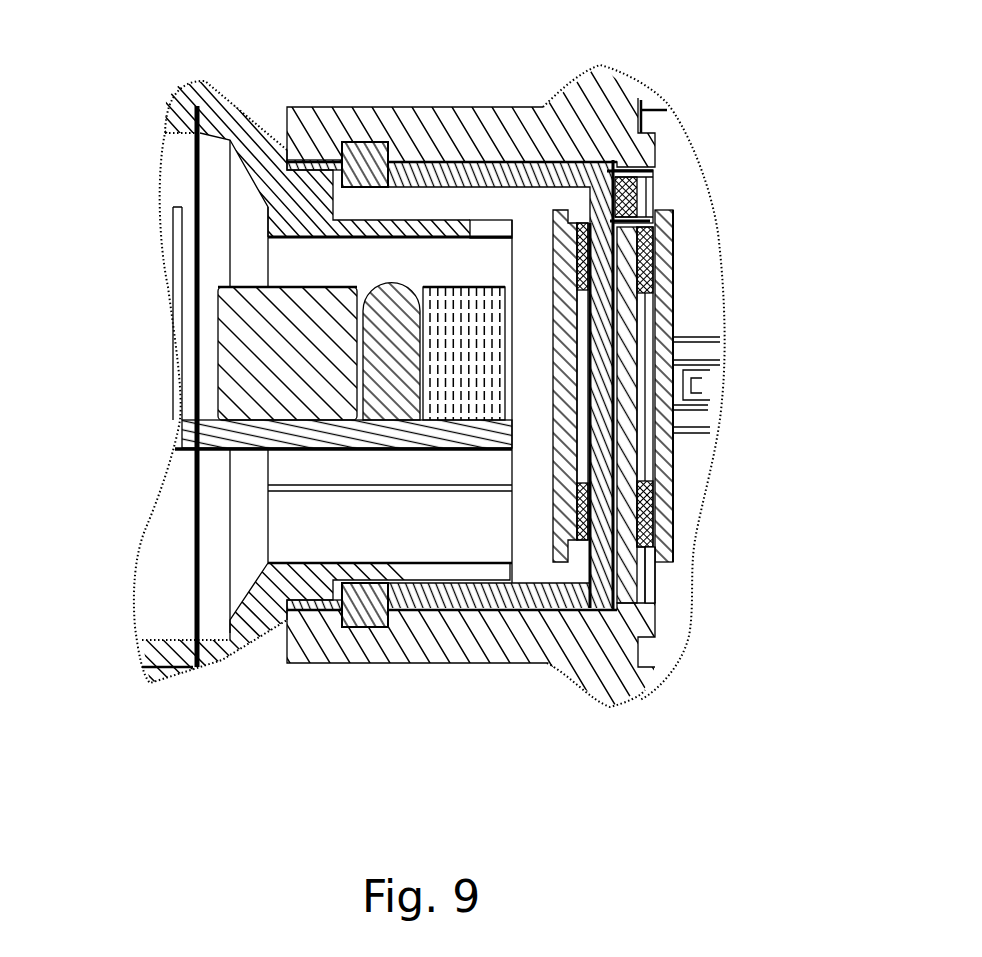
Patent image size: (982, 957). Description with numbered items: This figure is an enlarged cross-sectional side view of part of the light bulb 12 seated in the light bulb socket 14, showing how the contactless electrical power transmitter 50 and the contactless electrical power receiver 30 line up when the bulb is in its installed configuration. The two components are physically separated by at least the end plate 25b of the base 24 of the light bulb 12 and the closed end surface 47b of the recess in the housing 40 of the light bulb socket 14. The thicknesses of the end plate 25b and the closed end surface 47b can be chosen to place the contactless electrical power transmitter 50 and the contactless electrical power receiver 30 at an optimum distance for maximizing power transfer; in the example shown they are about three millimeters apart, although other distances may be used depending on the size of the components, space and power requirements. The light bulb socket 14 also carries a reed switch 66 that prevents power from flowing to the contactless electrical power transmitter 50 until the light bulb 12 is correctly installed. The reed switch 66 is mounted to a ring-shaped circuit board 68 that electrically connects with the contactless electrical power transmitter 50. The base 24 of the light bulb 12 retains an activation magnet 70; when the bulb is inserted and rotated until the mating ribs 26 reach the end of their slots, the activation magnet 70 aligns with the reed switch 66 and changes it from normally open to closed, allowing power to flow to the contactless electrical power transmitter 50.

The light bulb 12 is at (134, 203).
The light bulb socket 14 is at (712, 604).
The base 24 is at (447, 170).
The end plate 25b is at (558, 455).
The mating ribs 26 is at (362, 148).
The contactless electrical power receiver 30 is at (583, 430).
The housing 40 is at (632, 92).
The closed end surface 47b is at (627, 462).
The contactless electrical power transmitter 50 is at (668, 292).
The reed switch 66 is at (630, 198).
The ring-shaped circuit board 68 is at (655, 573).
The activation magnet 70 is at (578, 198).